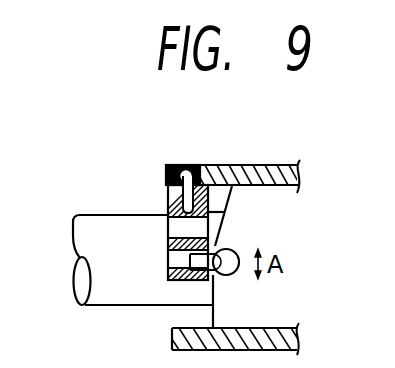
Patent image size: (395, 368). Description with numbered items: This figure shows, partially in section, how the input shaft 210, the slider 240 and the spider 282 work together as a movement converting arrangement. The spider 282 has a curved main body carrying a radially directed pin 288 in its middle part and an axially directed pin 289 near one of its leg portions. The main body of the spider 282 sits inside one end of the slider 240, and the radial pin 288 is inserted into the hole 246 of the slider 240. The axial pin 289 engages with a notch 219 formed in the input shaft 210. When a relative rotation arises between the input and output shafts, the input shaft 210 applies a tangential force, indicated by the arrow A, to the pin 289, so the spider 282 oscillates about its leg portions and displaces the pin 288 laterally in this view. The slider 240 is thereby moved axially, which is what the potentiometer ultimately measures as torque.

The slider 240 is at (265, 166).
The hole 246 is at (195, 167).
The pin 288 is at (185, 168).
The spider 282 is at (168, 247).
The notch 219 is at (233, 250).
The pin 289 is at (233, 257).
The input shaft 210 is at (276, 243).